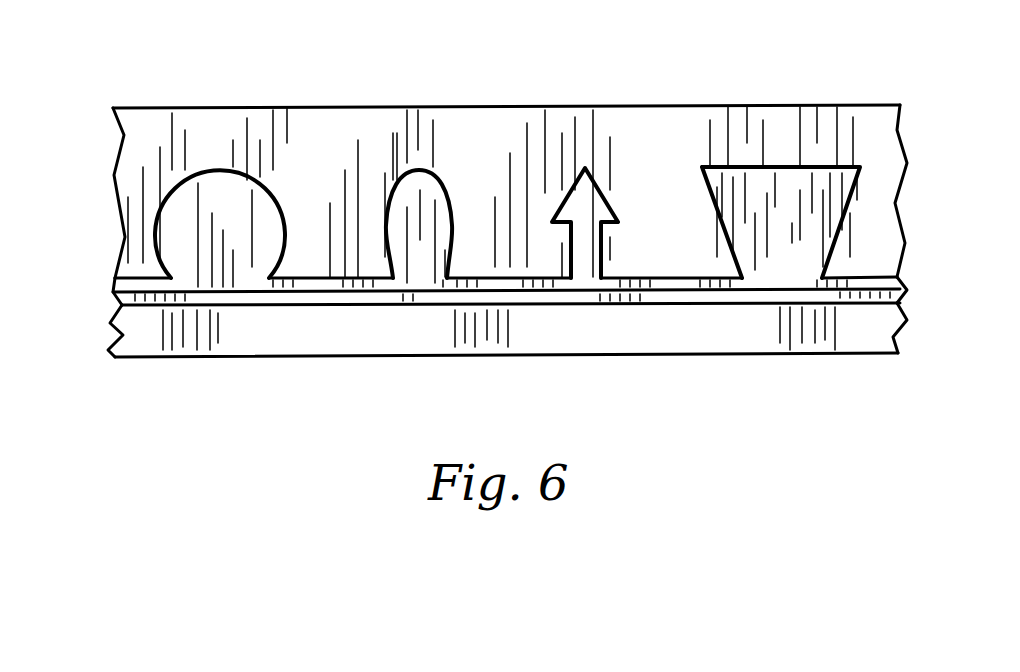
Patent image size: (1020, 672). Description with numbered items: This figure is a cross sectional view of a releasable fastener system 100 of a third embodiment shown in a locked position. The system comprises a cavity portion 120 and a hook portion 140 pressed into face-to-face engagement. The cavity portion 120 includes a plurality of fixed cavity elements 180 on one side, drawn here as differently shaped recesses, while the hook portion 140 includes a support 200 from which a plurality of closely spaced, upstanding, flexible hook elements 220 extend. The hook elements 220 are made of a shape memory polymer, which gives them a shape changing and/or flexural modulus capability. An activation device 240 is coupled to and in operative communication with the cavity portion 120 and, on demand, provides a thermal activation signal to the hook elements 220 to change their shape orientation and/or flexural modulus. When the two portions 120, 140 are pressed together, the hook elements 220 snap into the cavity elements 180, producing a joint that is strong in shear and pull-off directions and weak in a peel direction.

The releasable fastener system 100 is at (424, 90).
The cavity portion 120 is at (98, 152).
The hook portion 140 is at (92, 305).
The cavity elements 180 is at (218, 170).
The support 200 is at (687, 342).
The hook elements 220 is at (225, 217).
The activation device 240 is at (343, 300).